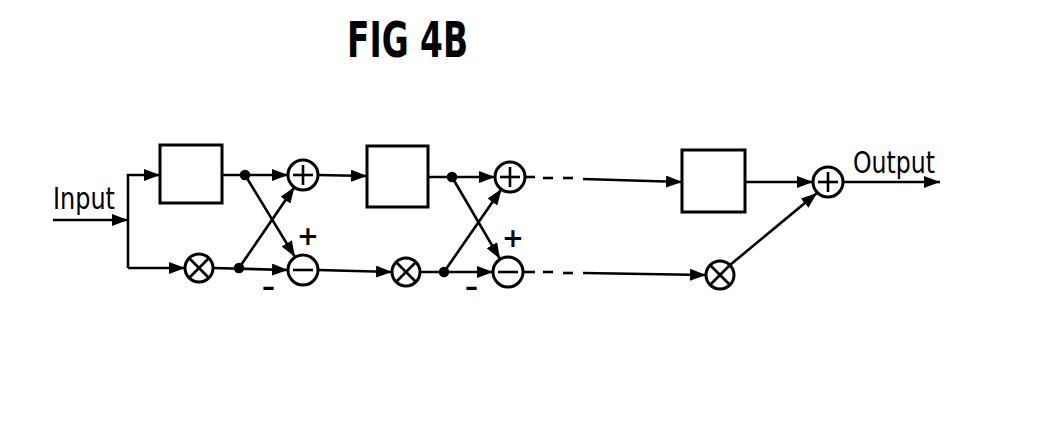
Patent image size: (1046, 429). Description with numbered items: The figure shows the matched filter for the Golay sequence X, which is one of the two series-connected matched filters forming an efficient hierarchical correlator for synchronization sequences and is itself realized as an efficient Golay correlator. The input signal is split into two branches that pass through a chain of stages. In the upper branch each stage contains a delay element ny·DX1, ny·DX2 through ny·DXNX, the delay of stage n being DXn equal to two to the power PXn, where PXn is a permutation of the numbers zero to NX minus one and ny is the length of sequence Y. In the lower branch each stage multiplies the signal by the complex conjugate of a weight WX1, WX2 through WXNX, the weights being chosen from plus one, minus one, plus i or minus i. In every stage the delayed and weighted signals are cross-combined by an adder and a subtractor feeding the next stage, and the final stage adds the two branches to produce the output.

The delay value DX1 is at (205, 145).
The delay value DX2 is at (412, 147).
The delay value DXNX is at (727, 150).
The weight WX1 is at (200, 283).
The weight WX2 is at (407, 287).
The weight WXNX is at (721, 290).